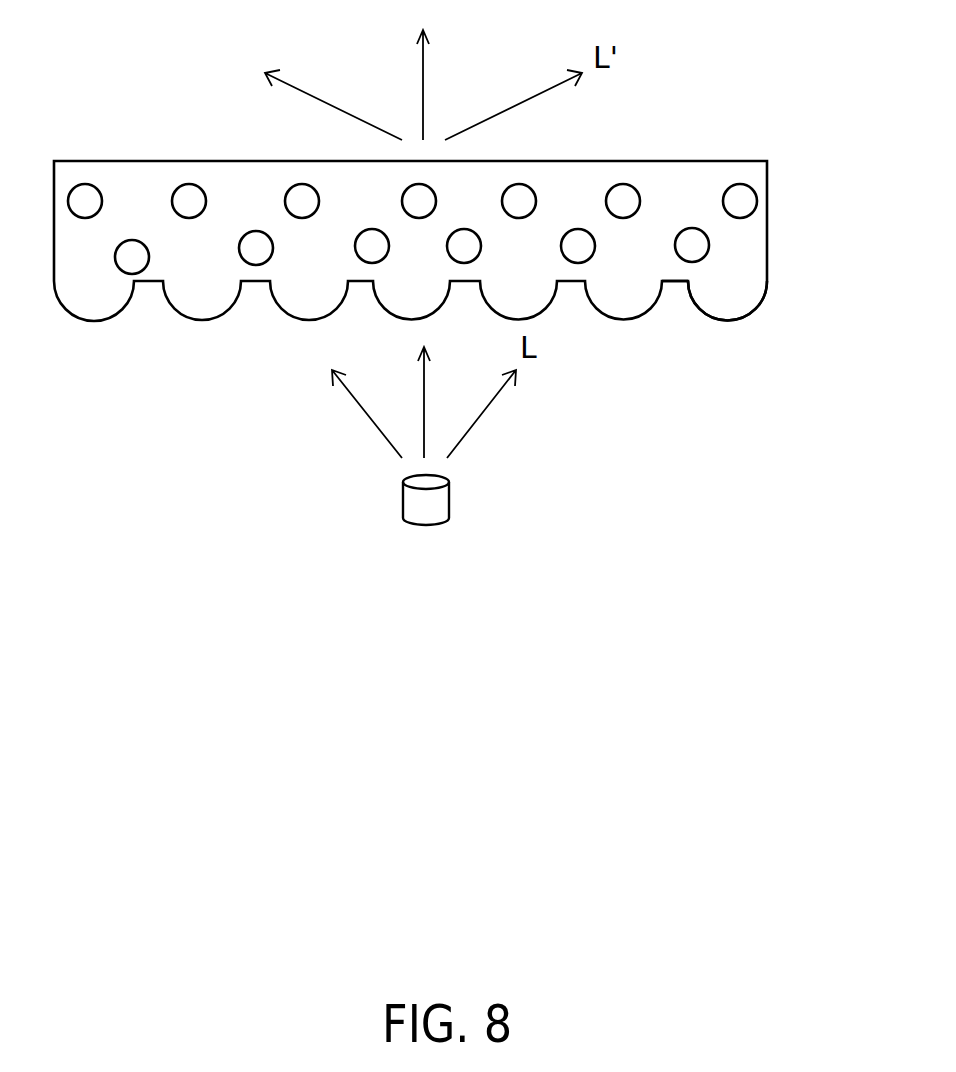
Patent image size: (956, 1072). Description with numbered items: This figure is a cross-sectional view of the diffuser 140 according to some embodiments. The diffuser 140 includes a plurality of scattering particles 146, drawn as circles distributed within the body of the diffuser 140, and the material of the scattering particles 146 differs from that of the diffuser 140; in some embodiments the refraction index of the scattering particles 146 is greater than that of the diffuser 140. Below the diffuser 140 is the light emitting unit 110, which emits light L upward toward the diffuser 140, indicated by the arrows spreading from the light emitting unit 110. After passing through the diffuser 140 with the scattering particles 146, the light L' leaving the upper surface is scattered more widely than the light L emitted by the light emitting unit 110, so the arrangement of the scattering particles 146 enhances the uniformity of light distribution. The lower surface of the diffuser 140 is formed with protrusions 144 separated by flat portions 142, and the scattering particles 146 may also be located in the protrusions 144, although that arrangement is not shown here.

The light emitting unit 110 is at (432, 505).
The diffuser 140 is at (743, 240).
The flat portion 142 is at (675, 283).
The protrusions 144 is at (737, 307).
The scattering particles 146 is at (745, 200).